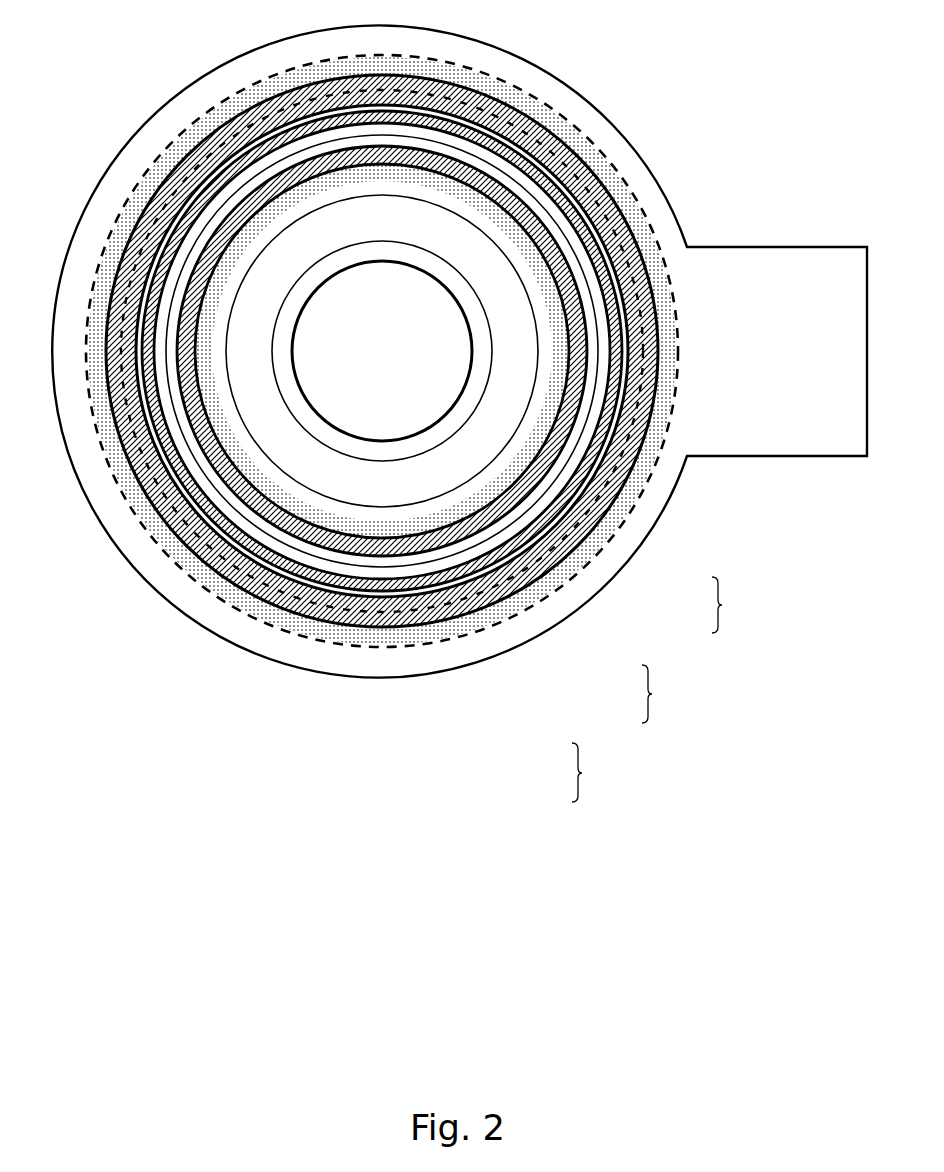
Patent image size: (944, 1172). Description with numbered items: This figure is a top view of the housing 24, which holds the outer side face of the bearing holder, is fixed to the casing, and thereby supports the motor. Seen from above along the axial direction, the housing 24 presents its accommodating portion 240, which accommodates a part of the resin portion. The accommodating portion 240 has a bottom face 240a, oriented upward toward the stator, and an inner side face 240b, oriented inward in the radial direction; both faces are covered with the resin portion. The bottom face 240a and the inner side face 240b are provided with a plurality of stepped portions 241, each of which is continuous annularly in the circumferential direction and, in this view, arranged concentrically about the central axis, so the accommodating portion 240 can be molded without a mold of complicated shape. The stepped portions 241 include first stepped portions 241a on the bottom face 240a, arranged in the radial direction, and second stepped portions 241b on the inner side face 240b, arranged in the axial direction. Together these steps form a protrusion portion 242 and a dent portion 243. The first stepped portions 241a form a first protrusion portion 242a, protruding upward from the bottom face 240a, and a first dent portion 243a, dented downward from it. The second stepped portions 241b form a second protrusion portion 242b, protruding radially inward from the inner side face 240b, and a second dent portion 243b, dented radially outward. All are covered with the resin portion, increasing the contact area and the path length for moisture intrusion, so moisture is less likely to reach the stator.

The housing 24 is at (183, 110).
The accommodating portion 240 is at (492, 84).
The bottom face 240a is at (549, 321).
The inner side face 240b is at (654, 336).
The stepped portions 241 is at (739, 605).
The first stepped portions 241a is at (538, 505).
The second stepped portions 241b is at (572, 578).
The protrusion portion 242 is at (669, 694).
The first protrusion portion 242a is at (470, 587).
The second protrusion portion 242b is at (475, 568).
The dent portion 243 is at (599, 772).
The first dent portion 243a is at (408, 525).
The second dent portion 243b is at (418, 650).